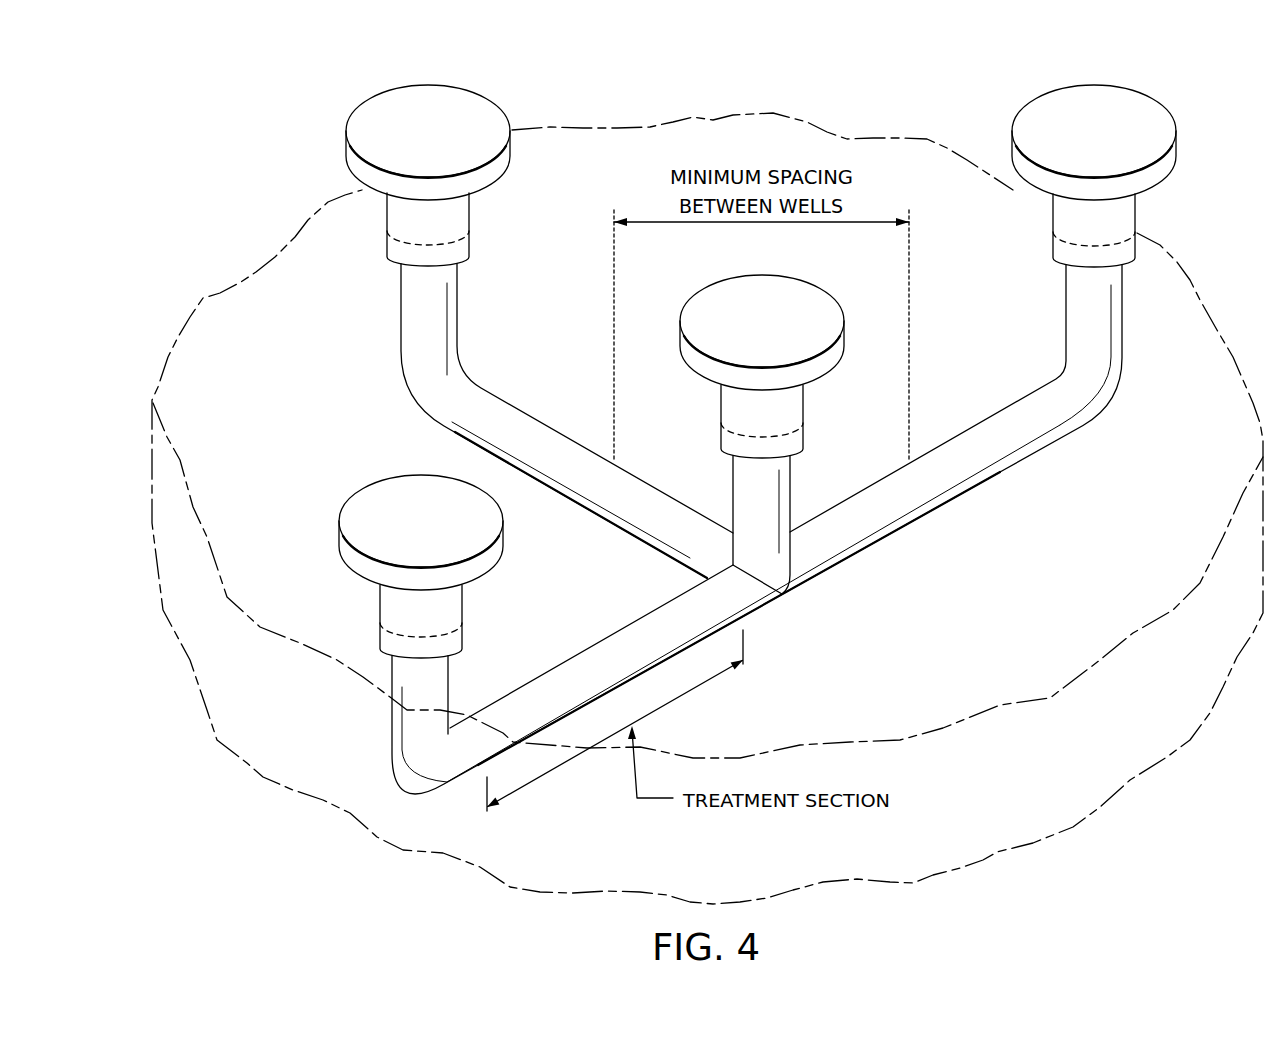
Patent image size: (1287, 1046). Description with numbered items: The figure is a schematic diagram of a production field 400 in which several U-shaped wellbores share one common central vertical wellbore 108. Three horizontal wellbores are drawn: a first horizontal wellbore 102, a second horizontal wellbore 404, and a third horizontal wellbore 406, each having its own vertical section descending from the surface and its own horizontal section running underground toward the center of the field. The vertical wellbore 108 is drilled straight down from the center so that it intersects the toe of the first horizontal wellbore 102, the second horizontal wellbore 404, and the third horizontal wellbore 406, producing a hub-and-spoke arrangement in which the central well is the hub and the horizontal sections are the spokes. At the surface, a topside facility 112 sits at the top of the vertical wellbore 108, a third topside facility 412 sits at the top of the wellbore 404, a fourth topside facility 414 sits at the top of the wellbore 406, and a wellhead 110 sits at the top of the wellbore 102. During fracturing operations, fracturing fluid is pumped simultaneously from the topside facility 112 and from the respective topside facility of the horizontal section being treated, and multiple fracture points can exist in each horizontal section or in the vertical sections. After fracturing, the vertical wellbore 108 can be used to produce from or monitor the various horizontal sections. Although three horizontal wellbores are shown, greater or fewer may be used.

The production field 400 is at (190, 92).
The first wellhead 110 is at (363, 110).
The first horizontal wellbore 102 is at (402, 312).
The topside facility 112 is at (831, 299).
The vertical wellbore 108 is at (792, 477).
The fourth topside facility 414 is at (1160, 110).
The third horizontal wellbore 406 is at (1124, 342).
The third topside facility 412 is at (357, 496).
The second horizontal wellbore 404 is at (392, 718).